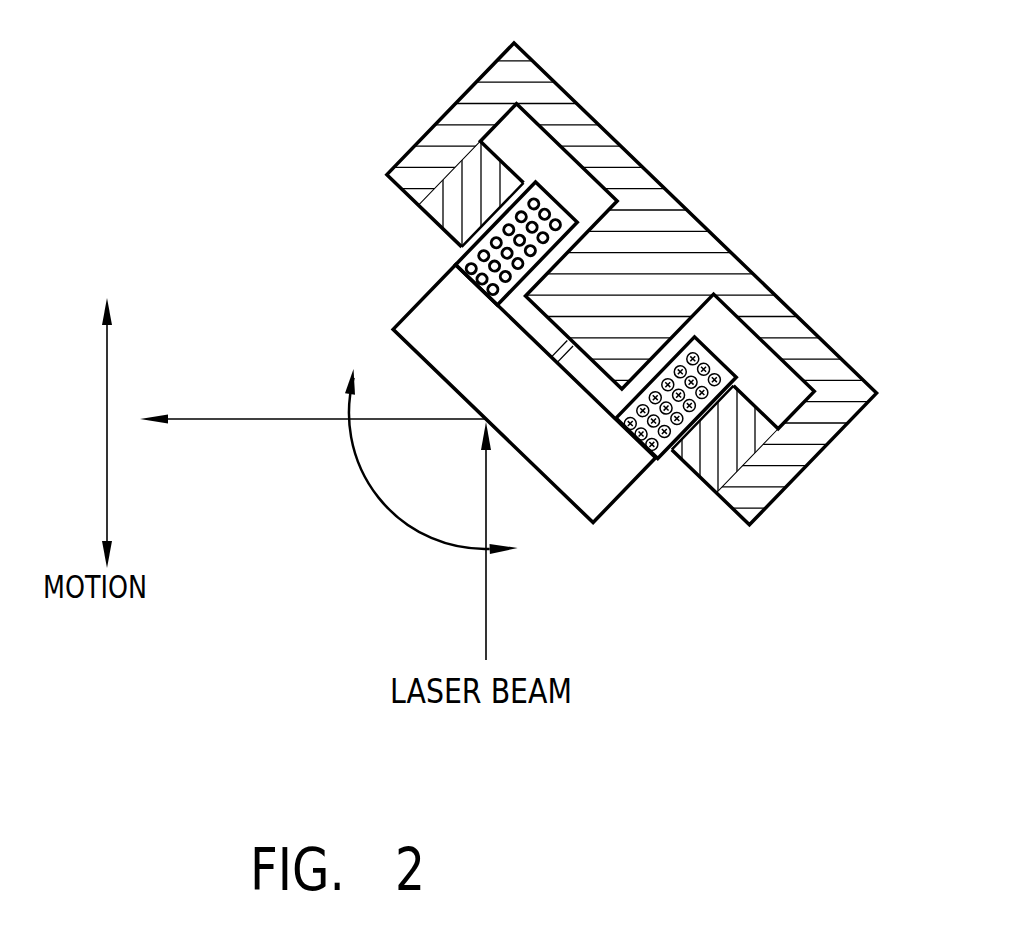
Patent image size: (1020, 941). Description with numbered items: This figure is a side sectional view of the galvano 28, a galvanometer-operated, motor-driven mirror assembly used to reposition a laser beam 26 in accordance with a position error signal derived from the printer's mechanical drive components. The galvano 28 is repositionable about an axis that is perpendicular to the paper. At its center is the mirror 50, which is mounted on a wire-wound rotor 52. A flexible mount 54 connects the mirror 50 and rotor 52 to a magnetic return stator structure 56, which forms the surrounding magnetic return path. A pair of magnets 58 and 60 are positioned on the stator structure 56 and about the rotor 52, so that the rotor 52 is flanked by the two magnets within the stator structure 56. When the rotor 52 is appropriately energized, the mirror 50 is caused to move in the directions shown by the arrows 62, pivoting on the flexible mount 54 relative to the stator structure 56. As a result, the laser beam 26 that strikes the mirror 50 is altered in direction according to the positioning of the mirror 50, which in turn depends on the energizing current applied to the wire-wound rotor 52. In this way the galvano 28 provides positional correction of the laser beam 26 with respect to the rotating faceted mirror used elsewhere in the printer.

The laser beam 26 is at (232, 416).
The galvano 28 is at (322, 208).
The mirror 50 is at (568, 478).
The wire-wound rotor 52 is at (452, 247).
The flexible mount 54 is at (553, 355).
The magnetic return stator structure 56 is at (515, 70).
The magnet 58 is at (468, 175).
The magnet 60 is at (725, 462).
The arrows 62 is at (372, 483).